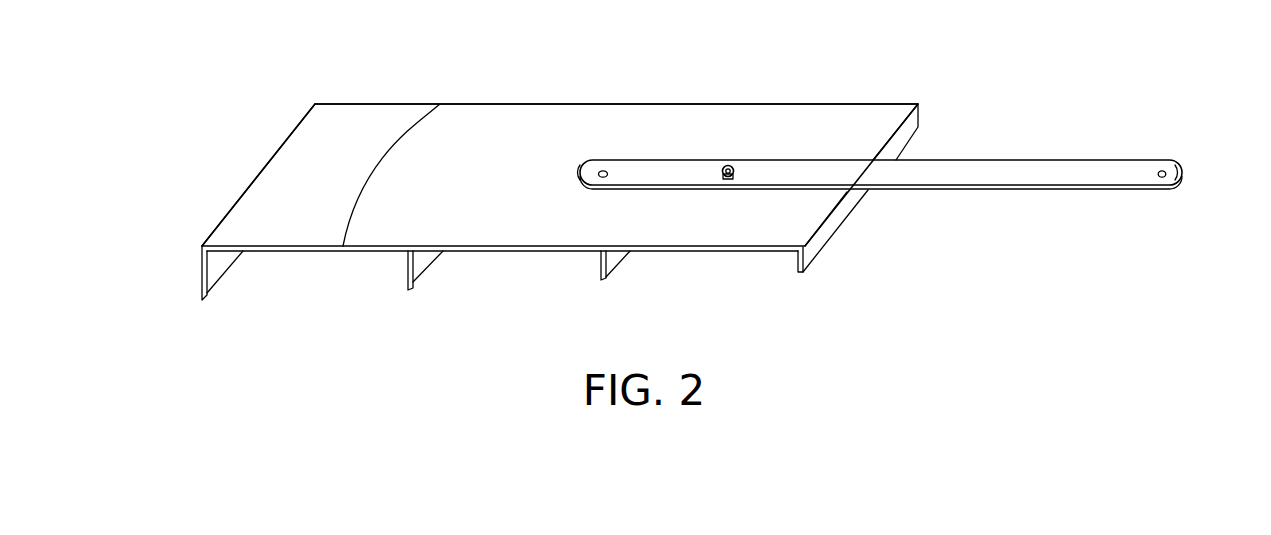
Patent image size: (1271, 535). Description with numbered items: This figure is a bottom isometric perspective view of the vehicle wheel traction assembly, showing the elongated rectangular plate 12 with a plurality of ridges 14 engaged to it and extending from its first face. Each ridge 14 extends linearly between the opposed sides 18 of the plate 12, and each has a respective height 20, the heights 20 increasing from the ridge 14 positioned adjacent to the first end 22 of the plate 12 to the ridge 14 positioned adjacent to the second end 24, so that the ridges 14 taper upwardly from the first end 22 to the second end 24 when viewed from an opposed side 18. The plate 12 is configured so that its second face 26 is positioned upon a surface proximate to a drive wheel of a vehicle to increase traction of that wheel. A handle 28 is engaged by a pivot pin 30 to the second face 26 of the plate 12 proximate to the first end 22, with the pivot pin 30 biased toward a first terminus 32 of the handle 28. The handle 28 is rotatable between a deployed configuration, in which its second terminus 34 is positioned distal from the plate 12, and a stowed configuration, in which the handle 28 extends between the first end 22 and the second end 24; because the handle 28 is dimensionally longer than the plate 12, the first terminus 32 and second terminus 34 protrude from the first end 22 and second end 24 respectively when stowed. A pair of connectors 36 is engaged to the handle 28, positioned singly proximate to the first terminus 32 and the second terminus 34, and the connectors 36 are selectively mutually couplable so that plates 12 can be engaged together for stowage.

The plate 12 is at (615, 104).
The ridges 14 is at (798, 268).
The opposed sides 18 is at (440, 105).
The height 20 is at (200, 269).
The first end 22 is at (903, 134).
The second end 24 is at (260, 168).
The second face 26 is at (489, 193).
The handle 28 is at (1042, 168).
The pivot pin 30 is at (728, 165).
The first terminus 32 is at (581, 171).
The second terminus 34 is at (1187, 173).
The connectors 36 is at (610, 175).